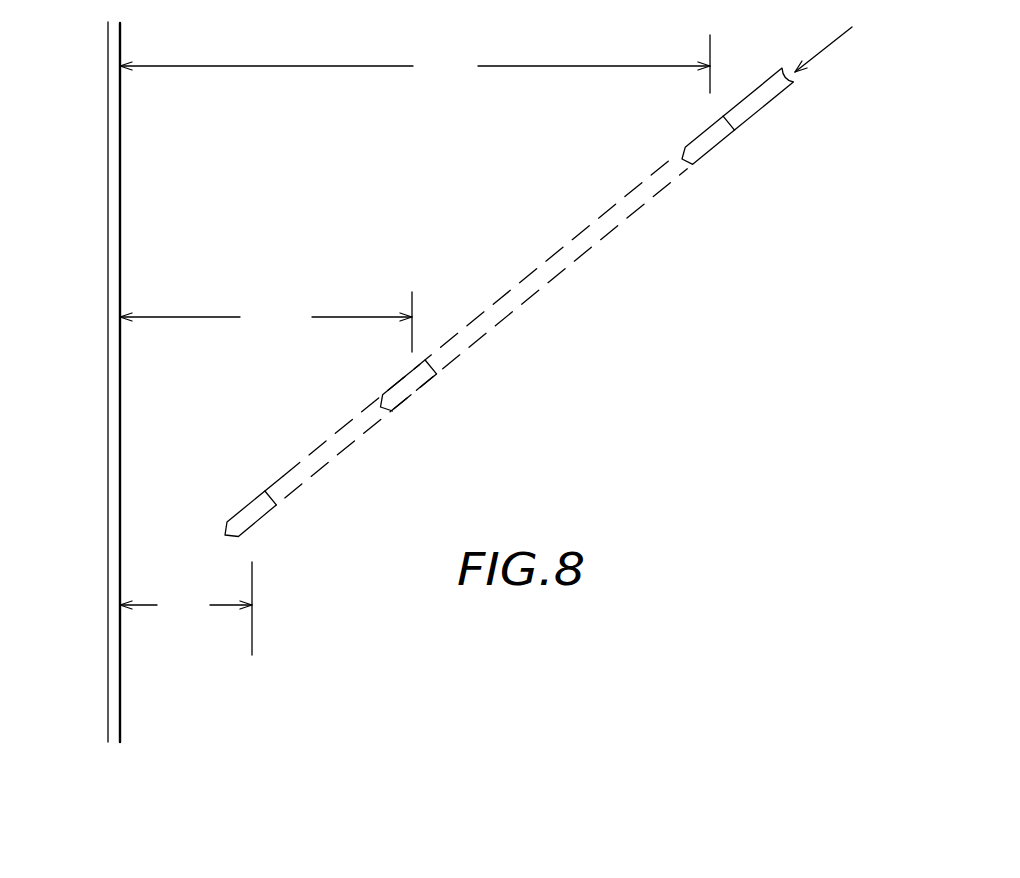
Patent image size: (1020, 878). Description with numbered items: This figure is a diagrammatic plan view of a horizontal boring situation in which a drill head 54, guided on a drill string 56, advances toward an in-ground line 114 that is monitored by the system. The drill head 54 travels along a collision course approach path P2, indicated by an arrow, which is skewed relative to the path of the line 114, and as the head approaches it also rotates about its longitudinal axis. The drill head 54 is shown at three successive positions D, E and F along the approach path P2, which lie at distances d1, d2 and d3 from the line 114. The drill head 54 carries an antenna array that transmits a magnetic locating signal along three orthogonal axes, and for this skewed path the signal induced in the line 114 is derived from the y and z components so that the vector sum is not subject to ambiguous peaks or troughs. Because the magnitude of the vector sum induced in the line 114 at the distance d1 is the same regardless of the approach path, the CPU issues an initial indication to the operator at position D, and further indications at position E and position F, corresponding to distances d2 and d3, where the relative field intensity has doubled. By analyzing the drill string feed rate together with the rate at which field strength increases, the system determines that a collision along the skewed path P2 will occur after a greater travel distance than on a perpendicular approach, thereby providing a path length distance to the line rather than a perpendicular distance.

The line 114 is at (108, 523).
The drill head 54 is at (712, 152).
The drill string 56 is at (757, 117).
The first drill head position D is at (733, 137).
The second drill head position E is at (333, 462).
The third drill head position F is at (258, 522).
The approach path P2 is at (825, 48).
The first distance d1 is at (415, 64).
The second distance d2 is at (266, 322).
The third distance d3 is at (186, 608).